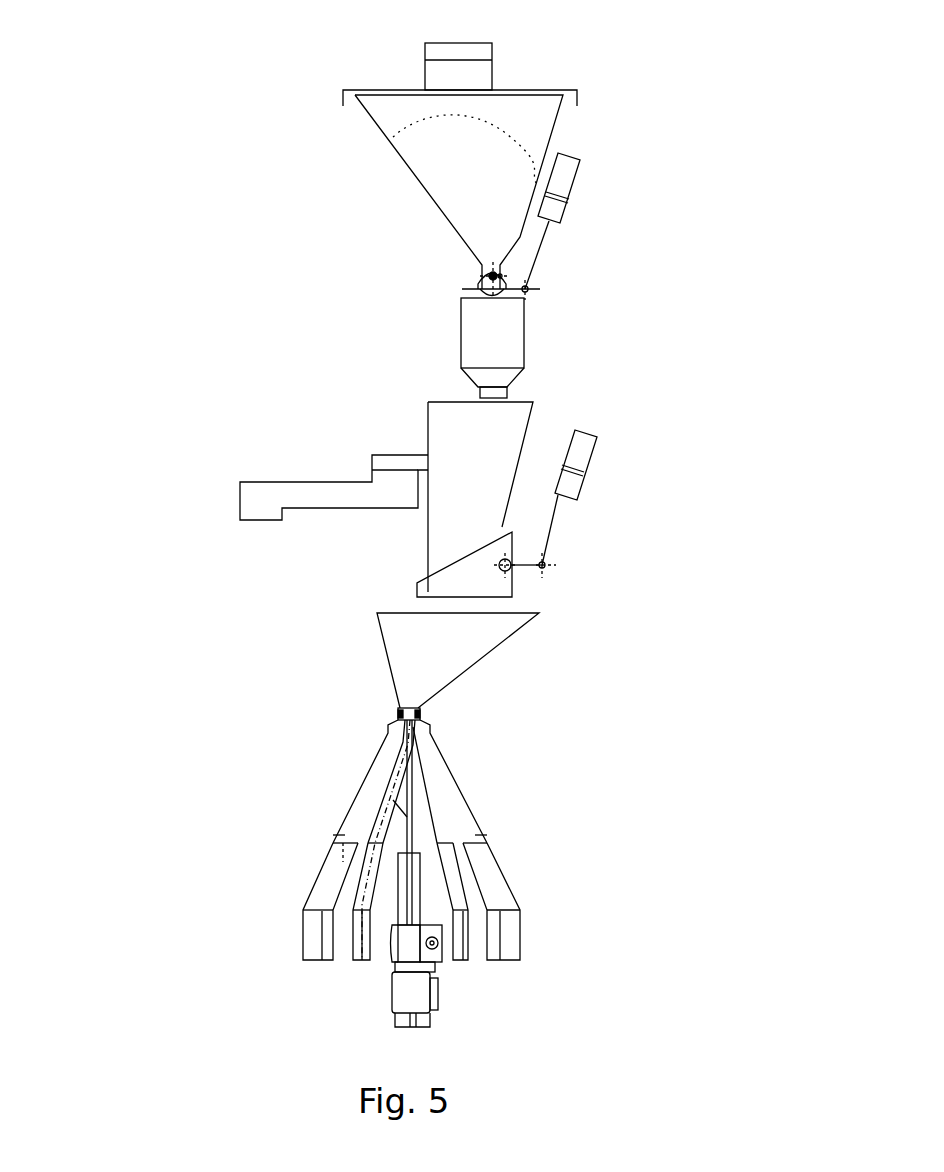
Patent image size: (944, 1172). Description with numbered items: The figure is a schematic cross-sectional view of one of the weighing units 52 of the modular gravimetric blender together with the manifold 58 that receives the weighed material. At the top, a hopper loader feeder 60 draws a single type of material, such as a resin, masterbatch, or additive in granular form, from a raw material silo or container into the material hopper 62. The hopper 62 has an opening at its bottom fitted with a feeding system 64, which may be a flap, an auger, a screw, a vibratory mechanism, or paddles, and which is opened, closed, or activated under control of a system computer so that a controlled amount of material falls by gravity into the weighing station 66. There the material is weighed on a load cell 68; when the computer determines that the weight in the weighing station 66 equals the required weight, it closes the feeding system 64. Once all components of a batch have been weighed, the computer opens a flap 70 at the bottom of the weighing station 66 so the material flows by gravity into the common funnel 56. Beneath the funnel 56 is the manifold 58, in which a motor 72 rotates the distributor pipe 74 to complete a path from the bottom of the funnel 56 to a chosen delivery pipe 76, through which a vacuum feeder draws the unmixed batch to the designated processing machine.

The weighing unit 52 is at (694, 60).
The funnel 56 is at (488, 655).
The manifold 58 is at (490, 778).
The hopper loader feeder 60 is at (492, 69).
The material hopper 62 is at (408, 172).
The feeding system 64 is at (498, 276).
The weighing station 66 is at (528, 433).
The load cell 68 is at (325, 480).
The flap 70 is at (423, 582).
The motor 72 is at (392, 1000).
The distributor pipe 74 is at (393, 772).
The delivery pipe 76 is at (349, 953).